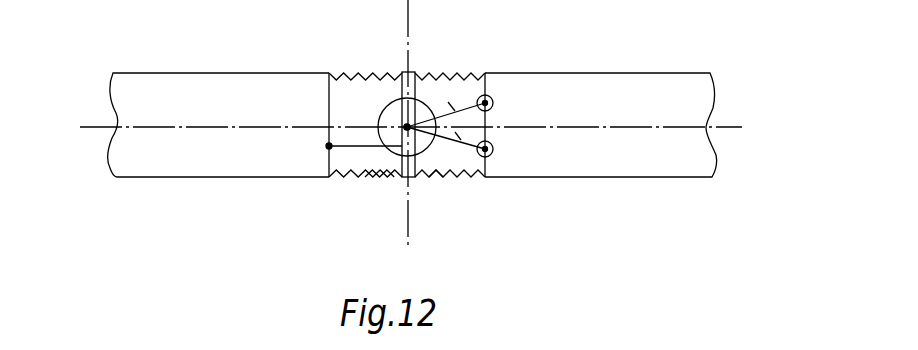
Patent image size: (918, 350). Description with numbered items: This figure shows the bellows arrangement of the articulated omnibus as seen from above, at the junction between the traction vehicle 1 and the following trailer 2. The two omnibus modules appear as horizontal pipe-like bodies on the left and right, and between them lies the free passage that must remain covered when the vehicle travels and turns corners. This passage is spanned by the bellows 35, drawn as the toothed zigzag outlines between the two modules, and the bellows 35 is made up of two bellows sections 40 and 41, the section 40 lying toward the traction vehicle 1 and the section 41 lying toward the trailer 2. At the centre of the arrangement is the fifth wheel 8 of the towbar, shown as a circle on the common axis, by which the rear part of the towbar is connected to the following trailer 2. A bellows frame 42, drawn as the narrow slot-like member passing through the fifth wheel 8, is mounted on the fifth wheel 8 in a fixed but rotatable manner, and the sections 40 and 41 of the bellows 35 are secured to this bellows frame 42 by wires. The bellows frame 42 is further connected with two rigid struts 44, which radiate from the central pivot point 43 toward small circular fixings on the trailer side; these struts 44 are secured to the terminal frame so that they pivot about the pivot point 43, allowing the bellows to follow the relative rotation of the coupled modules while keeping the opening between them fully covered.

The traction vehicle 1 is at (555, 100).
The trailer 2 is at (240, 103).
The fifth wheel 8 is at (392, 120).
The bellows 35 is at (437, 174).
The bellows section 40 is at (350, 157).
The bellows section 41 is at (462, 153).
The bellows frame 42 is at (407, 88).
The pivot point 43 is at (409, 125).
The rigid struts 44 is at (485, 141).